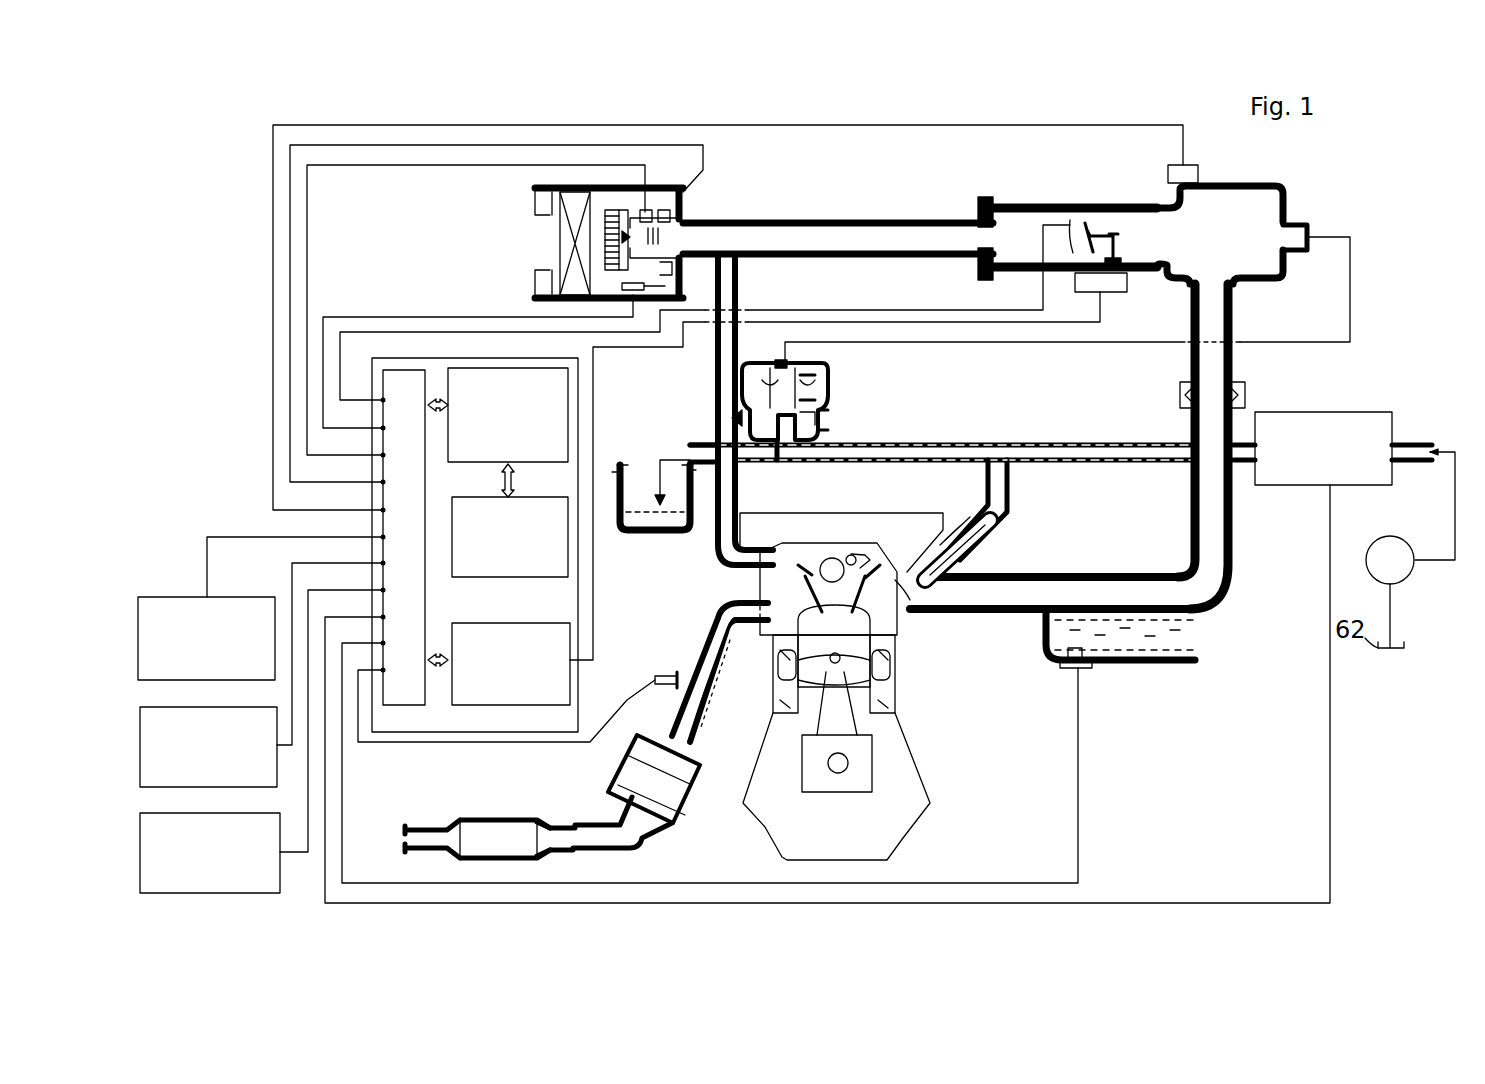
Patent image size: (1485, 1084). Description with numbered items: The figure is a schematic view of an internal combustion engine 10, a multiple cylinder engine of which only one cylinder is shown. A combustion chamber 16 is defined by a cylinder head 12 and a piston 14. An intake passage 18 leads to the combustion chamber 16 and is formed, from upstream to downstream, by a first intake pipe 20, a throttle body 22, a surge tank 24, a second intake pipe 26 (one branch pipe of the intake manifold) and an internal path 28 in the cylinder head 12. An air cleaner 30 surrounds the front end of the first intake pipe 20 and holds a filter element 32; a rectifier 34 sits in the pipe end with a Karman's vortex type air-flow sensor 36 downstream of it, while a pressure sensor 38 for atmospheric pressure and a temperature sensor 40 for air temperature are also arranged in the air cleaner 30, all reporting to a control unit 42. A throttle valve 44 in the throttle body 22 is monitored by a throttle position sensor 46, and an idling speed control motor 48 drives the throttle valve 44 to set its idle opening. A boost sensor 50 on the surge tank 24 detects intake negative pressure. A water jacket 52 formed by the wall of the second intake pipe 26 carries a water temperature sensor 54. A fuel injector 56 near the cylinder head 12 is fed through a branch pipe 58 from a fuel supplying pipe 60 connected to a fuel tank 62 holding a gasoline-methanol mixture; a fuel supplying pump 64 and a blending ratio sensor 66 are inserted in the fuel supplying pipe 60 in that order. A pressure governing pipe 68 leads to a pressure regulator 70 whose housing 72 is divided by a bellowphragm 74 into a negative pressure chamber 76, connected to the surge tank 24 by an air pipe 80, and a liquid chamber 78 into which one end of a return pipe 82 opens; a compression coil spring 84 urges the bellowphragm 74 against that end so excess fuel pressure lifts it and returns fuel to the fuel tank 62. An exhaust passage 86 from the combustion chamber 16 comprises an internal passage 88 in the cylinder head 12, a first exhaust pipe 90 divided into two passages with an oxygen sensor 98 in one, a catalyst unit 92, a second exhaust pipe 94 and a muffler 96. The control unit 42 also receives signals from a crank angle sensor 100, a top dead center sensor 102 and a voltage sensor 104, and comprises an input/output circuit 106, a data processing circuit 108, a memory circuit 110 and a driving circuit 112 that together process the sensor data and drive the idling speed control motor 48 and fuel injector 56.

The internal combustion engine 10 is at (928, 750).
The cylinder head 12 is at (880, 545).
The piston 14 is at (890, 682).
The combustion chamber 16 is at (828, 620).
The intake passage 18 is at (1045, 590).
The first intake pipe 20 is at (872, 221).
The throttle body 22 is at (1020, 203).
The surge tank 24 is at (1260, 188).
The second intake pipe 26 is at (1140, 573).
The internal path 28 is at (908, 605).
The air cleaner 30 is at (535, 203).
The filter element 32 is at (560, 240).
The rectifier 34 is at (612, 210).
The Karman's vortex type air-flow sensor 36 is at (683, 207).
The pressure sensor 38 is at (648, 210).
The temperature sensor 40 is at (665, 286).
The control unit 42 is at (402, 732).
The throttle valve 44 is at (1092, 225).
The throttle position sensor 46 is at (1068, 222).
The idling speed control motor 48 is at (1110, 283).
The boost sensor 50 is at (1198, 174).
The water jacket 52 is at (1198, 650).
The water temperature sensor 54 is at (1090, 670).
The fuel injector 56 is at (958, 522).
The branch pipe 58 is at (1012, 475).
The fuel supplying pipe 60 is at (1075, 441).
The fuel tank 62 is at (633, 465).
The fuel supplying pump 64 is at (1400, 536).
The blending ratio sensor 66 is at (1340, 412).
The pressure governing pipe 68 is at (955, 441).
The pressure regulator 70 is at (830, 412).
The housing 72 is at (820, 385).
The bellowphragm 74 is at (822, 402).
The negative pressure chamber 76 is at (828, 372).
The liquid chamber 78 is at (828, 430).
The air pipe 80 is at (1350, 305).
The return pipe 82 is at (770, 463).
The compression coil spring 84 is at (772, 372).
The exhaust passage 86 is at (695, 652).
The internal passage 88 is at (782, 607).
The first exhaust pipe 90 is at (718, 590).
The catalyst unit 92 is at (622, 770).
The second exhaust pipe 94 is at (595, 828).
The muffler 96 is at (492, 830).
The oxygen sensor 98 is at (663, 676).
The crank angle sensor 100 is at (172, 707).
The top dead center sensor 102 is at (200, 893).
The voltage sensor 104 is at (162, 597).
The input/output circuit 106 is at (408, 370).
The data processing circuit 108 is at (478, 368).
The memory circuit 110 is at (474, 497).
The driving circuit 112 is at (494, 623).